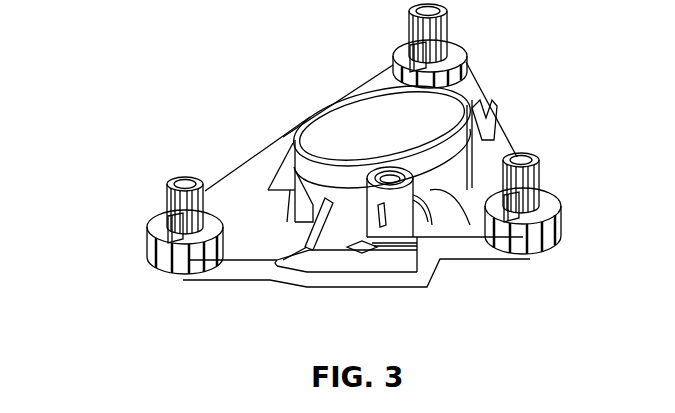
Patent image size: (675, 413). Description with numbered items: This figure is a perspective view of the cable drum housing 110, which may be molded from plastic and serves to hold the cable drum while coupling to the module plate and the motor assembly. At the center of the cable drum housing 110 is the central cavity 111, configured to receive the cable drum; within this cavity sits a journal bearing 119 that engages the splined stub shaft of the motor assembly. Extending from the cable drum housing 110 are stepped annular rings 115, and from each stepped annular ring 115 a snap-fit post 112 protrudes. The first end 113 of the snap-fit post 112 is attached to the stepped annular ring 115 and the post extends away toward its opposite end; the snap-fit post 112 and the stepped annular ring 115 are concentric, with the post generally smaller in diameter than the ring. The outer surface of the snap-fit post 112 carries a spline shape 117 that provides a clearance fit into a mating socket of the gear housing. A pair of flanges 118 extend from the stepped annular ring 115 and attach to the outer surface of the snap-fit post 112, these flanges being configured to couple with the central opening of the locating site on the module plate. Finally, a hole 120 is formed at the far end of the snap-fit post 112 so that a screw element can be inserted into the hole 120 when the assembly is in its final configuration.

The cable drum housing 110 is at (160, 28).
The central cavity 111 is at (483, 103).
The snap-fit post 112 is at (450, 33).
The first end 113 is at (450, 62).
The stepped annular ring 115 is at (398, 47).
The spline shape 117 is at (165, 190).
The flanges 118 is at (160, 236).
The journal bearing 119 is at (433, 193).
The hole 120 is at (182, 178).